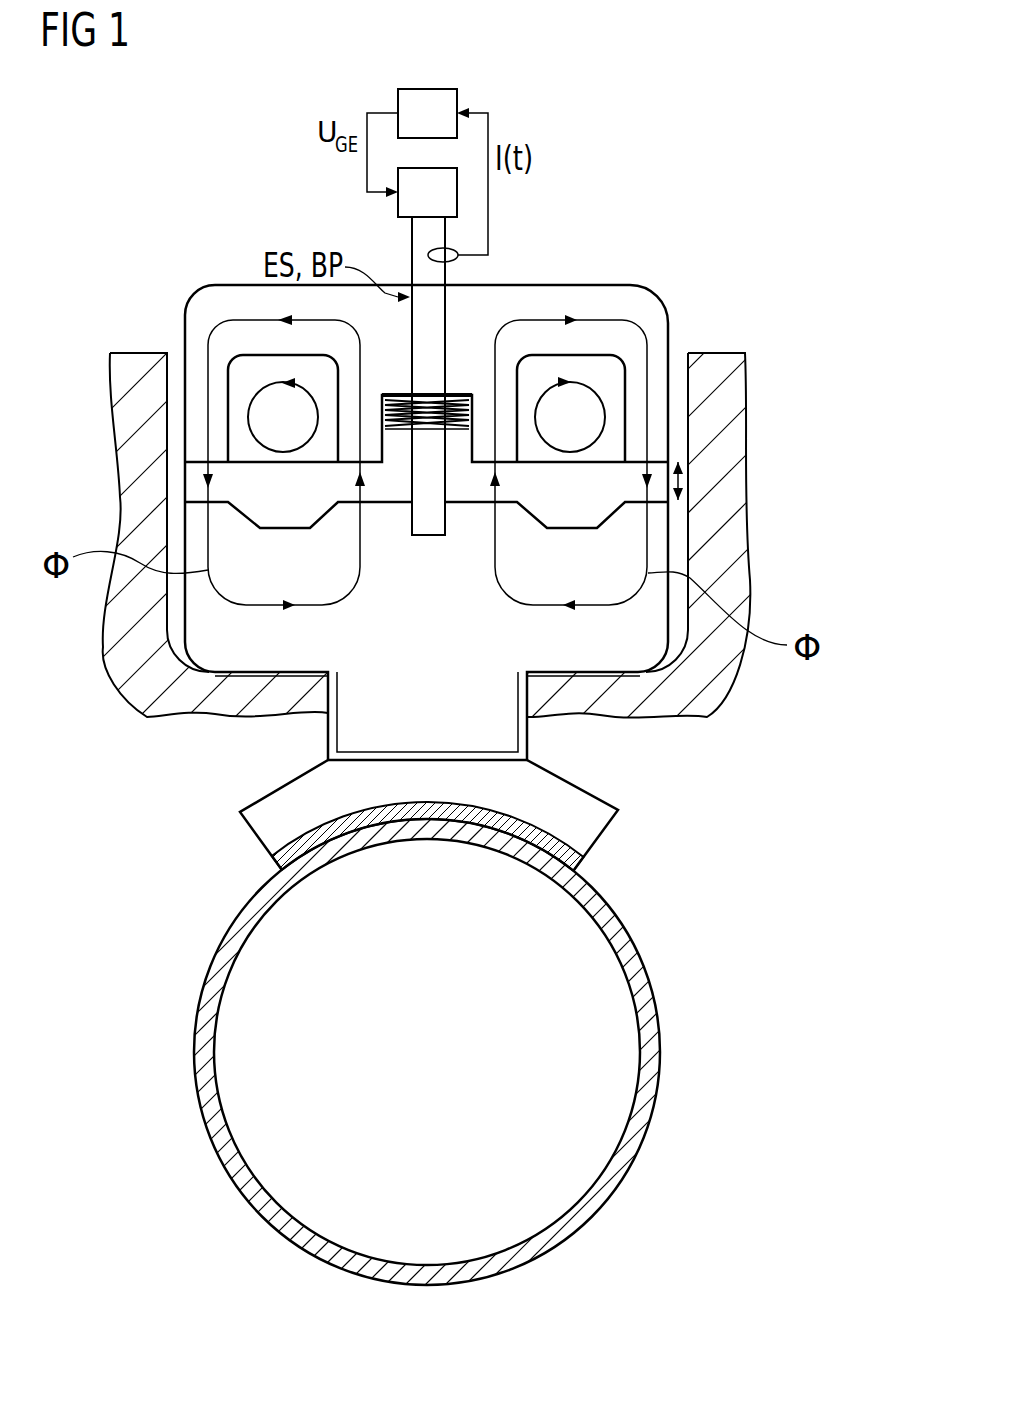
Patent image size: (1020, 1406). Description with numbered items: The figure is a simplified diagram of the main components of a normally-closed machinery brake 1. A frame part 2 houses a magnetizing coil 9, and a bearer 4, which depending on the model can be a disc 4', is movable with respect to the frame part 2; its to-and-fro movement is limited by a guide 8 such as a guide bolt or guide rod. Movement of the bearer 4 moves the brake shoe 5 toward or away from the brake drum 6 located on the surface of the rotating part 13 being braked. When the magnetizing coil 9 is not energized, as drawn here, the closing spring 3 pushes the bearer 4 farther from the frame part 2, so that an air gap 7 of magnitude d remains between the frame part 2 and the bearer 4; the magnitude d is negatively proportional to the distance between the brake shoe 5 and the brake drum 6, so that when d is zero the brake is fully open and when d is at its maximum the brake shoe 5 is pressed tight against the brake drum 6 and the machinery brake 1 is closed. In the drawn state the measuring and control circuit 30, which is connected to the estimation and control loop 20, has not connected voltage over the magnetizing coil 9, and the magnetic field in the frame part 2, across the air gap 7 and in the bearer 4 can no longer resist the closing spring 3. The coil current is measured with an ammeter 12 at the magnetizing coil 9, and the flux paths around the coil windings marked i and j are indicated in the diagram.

The machinery brake 1 is at (812, 767).
The frame part 2 is at (598, 285).
The closing spring 3 is at (458, 395).
The bearer 4 is at (463, 636).
The disc 4' is at (391, 815).
The brake shoe 5 is at (310, 847).
The brake drum 6 is at (653, 1055).
The air gap 7 is at (658, 485).
The guide 8 is at (427, 535).
The magnetizing coil 9 is at (268, 407).
The ammeter 12 is at (454, 258).
The rotating part 13 is at (612, 1013).
The estimation and control loop 20 is at (428, 88).
The measuring and control circuit 30 is at (457, 191).
The coil current i is at (253, 408).
The coil current j is at (607, 407).
The magnitude of air gap d is at (680, 480).